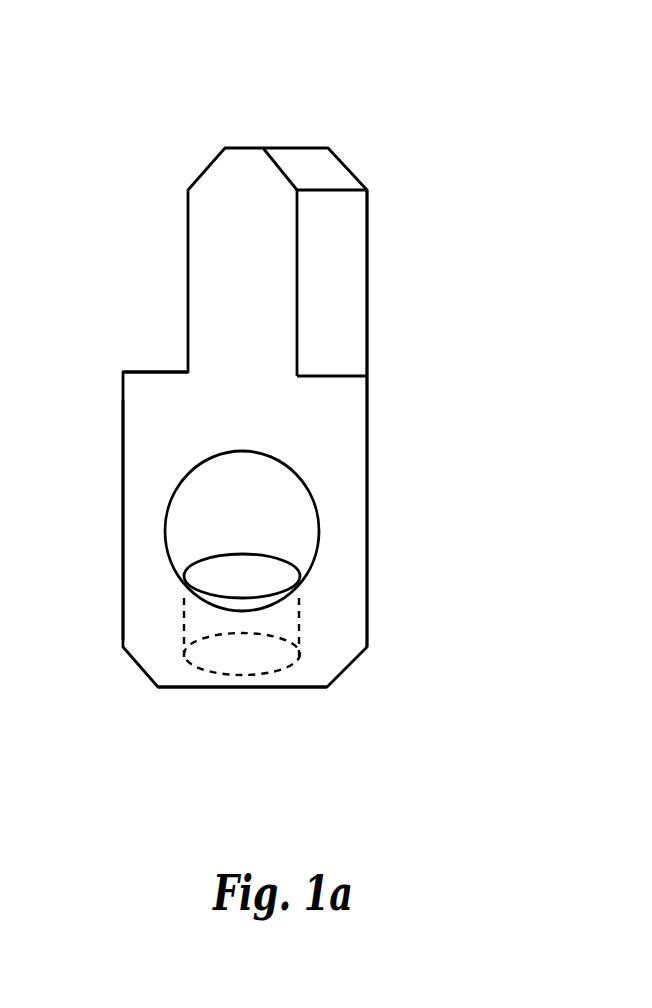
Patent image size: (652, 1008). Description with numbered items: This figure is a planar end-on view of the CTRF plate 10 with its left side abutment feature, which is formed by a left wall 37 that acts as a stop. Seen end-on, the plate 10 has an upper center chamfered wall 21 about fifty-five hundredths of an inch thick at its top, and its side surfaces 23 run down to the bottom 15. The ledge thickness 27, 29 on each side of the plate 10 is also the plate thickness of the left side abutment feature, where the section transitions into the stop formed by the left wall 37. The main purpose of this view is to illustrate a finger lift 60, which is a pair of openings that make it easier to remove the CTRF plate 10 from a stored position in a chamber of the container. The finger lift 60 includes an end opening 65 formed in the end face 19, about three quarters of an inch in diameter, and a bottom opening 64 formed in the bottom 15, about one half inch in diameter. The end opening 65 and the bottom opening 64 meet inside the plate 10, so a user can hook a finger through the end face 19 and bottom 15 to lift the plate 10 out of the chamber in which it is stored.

The CTRF plate 10 is at (147, 105).
The bottom 15 is at (186, 688).
The end face 19 is at (252, 393).
The upper center chamfered wall 21 is at (263, 148).
The side surface 23 is at (298, 260).
The ledge thickness 27 is at (150, 368).
The ledge thickness 29 is at (337, 370).
The left wall 37 is at (352, 247).
The finger lift 60 is at (361, 614).
The bottom opening 64 is at (247, 663).
The end opening 65 is at (307, 553).